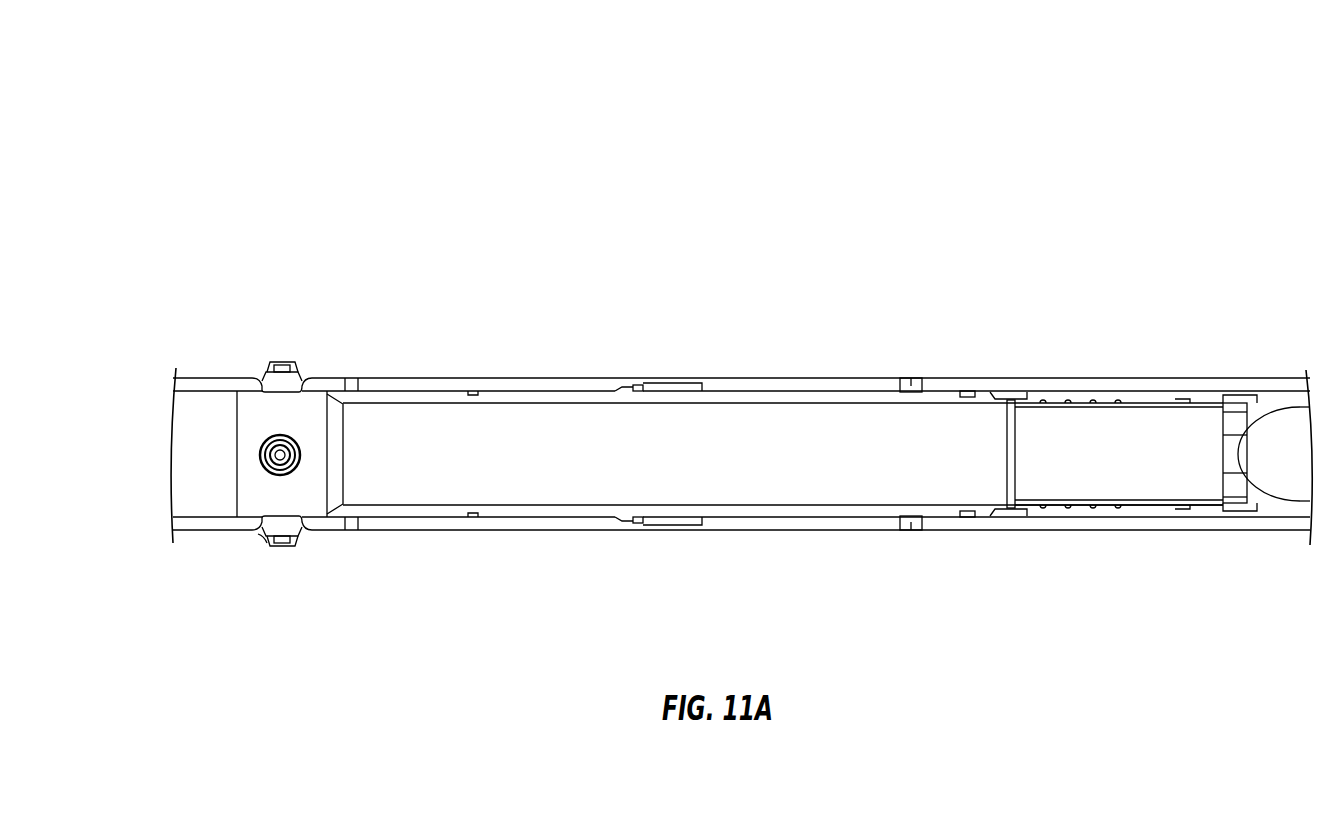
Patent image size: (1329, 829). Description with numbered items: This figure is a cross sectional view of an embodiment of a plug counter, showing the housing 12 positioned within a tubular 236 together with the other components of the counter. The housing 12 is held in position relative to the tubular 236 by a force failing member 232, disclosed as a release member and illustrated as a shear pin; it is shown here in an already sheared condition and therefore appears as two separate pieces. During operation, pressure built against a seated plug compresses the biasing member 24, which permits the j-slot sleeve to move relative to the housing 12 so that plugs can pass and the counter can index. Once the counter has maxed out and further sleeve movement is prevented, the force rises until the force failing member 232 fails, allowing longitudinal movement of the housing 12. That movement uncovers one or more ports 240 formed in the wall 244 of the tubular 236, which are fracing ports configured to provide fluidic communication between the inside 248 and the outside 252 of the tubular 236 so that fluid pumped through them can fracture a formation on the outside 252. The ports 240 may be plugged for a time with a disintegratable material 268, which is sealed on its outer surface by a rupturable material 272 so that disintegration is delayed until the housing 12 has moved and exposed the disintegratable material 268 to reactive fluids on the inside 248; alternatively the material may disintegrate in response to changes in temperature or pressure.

The outside 252 is at (455, 267).
The wall 244 is at (200, 378).
The inside 248 is at (198, 443).
The rupturable material 272 is at (290, 362).
The port 240 is at (298, 540).
The disintegratable material 268 is at (265, 543).
The tubular 236 is at (408, 378).
The housing 12 is at (495, 397).
The force failing member 232 is at (965, 391).
The biasing member 24 is at (1090, 512).